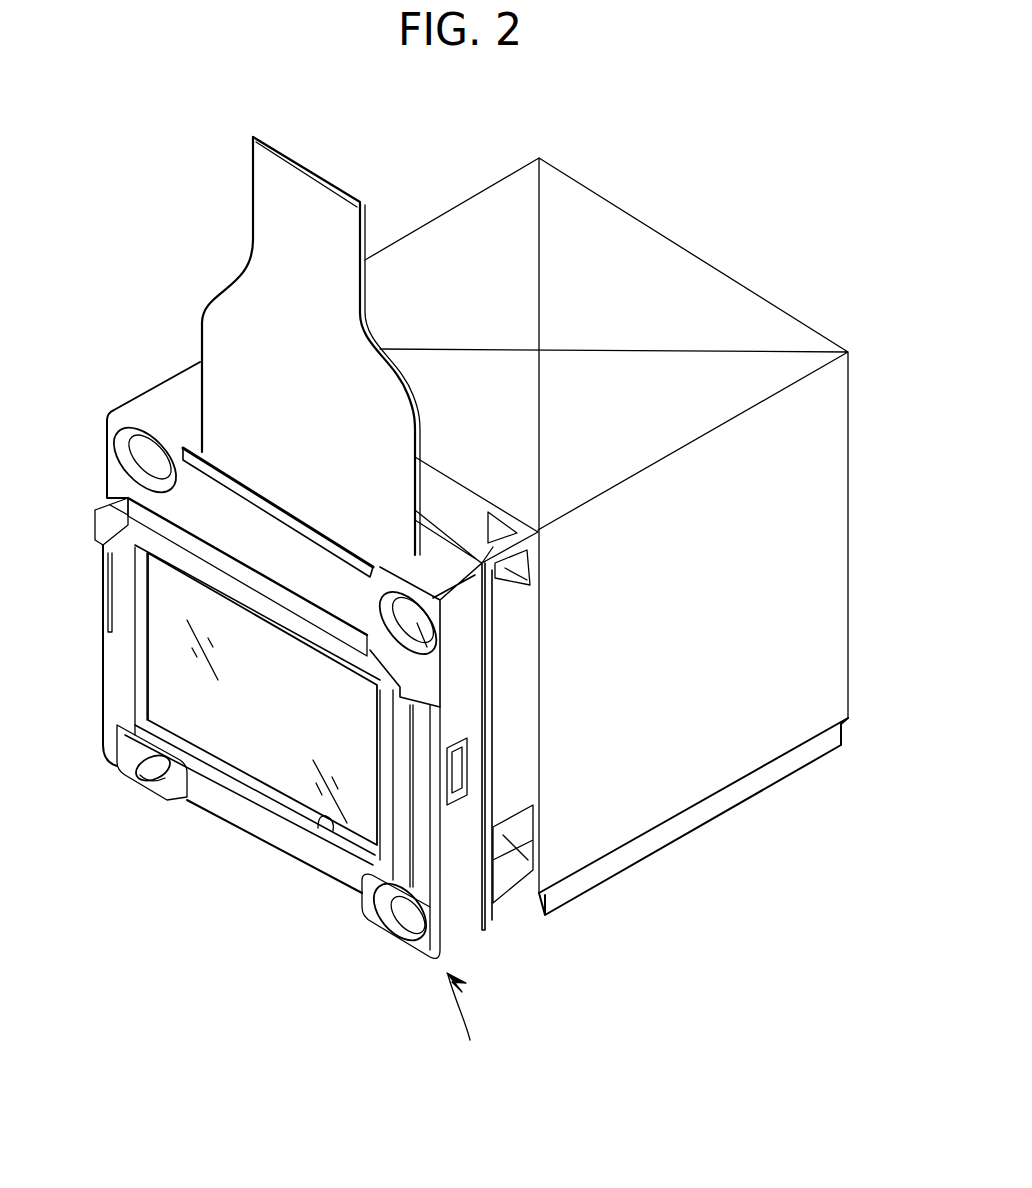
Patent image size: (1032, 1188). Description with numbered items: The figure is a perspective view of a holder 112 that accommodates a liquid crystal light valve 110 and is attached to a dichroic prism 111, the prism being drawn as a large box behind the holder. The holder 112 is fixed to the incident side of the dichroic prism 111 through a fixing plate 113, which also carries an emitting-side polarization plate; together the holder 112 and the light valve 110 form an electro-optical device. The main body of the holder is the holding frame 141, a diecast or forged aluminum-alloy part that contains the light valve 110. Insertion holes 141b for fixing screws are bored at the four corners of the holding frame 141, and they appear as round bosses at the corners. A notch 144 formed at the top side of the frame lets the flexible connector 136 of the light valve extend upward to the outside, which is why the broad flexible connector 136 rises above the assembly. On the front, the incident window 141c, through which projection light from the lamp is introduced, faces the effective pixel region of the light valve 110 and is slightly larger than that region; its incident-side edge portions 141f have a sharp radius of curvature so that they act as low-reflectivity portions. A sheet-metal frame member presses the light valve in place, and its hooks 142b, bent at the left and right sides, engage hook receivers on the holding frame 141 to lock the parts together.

The liquid crystal light valve 110 is at (270, 770).
The dichroic prism 111 is at (828, 603).
The holder 112 is at (475, 1022).
The fixing plate 113 is at (435, 527).
The flexible connector 136 is at (235, 337).
The holding frame 141 is at (457, 927).
The insertion hole 141b is at (127, 460).
The incident window 141c is at (297, 729).
The incident-side edge portion 141f is at (327, 830).
The hook 142b is at (455, 820).
The notch 144 is at (175, 445).